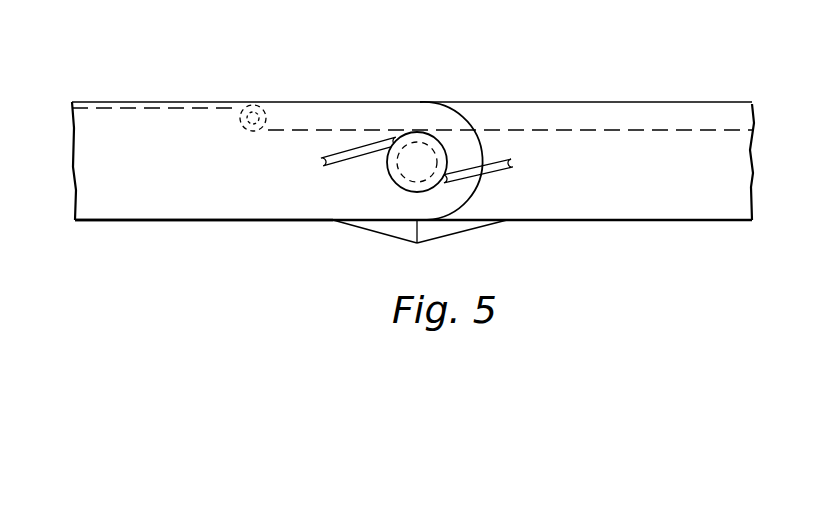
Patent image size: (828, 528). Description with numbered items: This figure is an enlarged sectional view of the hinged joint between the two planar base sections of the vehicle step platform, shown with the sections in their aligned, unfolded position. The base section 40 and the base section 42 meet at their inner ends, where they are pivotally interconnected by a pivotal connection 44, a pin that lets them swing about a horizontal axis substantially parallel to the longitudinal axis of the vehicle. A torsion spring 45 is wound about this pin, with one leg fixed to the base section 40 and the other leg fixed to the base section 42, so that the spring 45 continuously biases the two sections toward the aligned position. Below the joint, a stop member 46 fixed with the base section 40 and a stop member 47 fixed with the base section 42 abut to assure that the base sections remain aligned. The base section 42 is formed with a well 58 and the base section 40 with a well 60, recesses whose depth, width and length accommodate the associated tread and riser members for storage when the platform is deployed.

The base section 40 is at (663, 213).
The base section 42 is at (207, 205).
The pivotal connection 44 is at (417, 147).
The torsion spring 45 is at (366, 153).
The stop member 46 is at (445, 228).
The stop member 47 is at (390, 228).
The well 58 is at (147, 102).
The well 60 is at (635, 118).